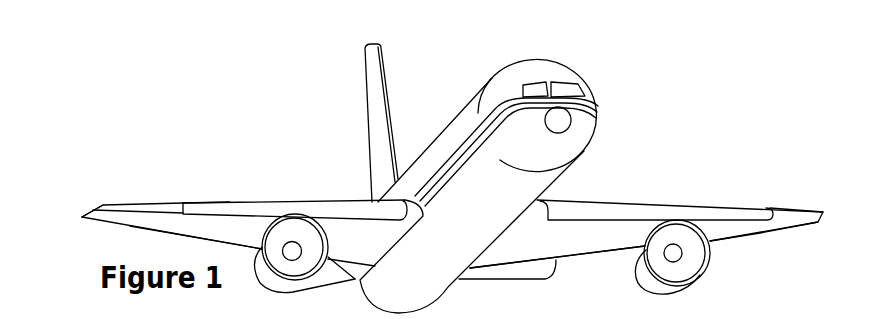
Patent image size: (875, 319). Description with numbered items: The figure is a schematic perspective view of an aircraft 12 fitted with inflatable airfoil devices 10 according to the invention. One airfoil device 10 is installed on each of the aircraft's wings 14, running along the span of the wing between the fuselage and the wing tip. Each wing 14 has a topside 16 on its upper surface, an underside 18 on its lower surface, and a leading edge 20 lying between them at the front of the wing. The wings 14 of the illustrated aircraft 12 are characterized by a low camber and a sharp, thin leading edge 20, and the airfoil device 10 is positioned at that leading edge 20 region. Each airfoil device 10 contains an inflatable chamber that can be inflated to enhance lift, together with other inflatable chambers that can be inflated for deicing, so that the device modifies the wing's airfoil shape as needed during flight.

The inflatable airfoil device 10 is at (252, 210).
The aircraft 12 is at (596, 96).
The wing 14 is at (138, 222).
The topside 16 is at (131, 203).
The underside 18 is at (218, 230).
The leading edge 20 is at (205, 202).